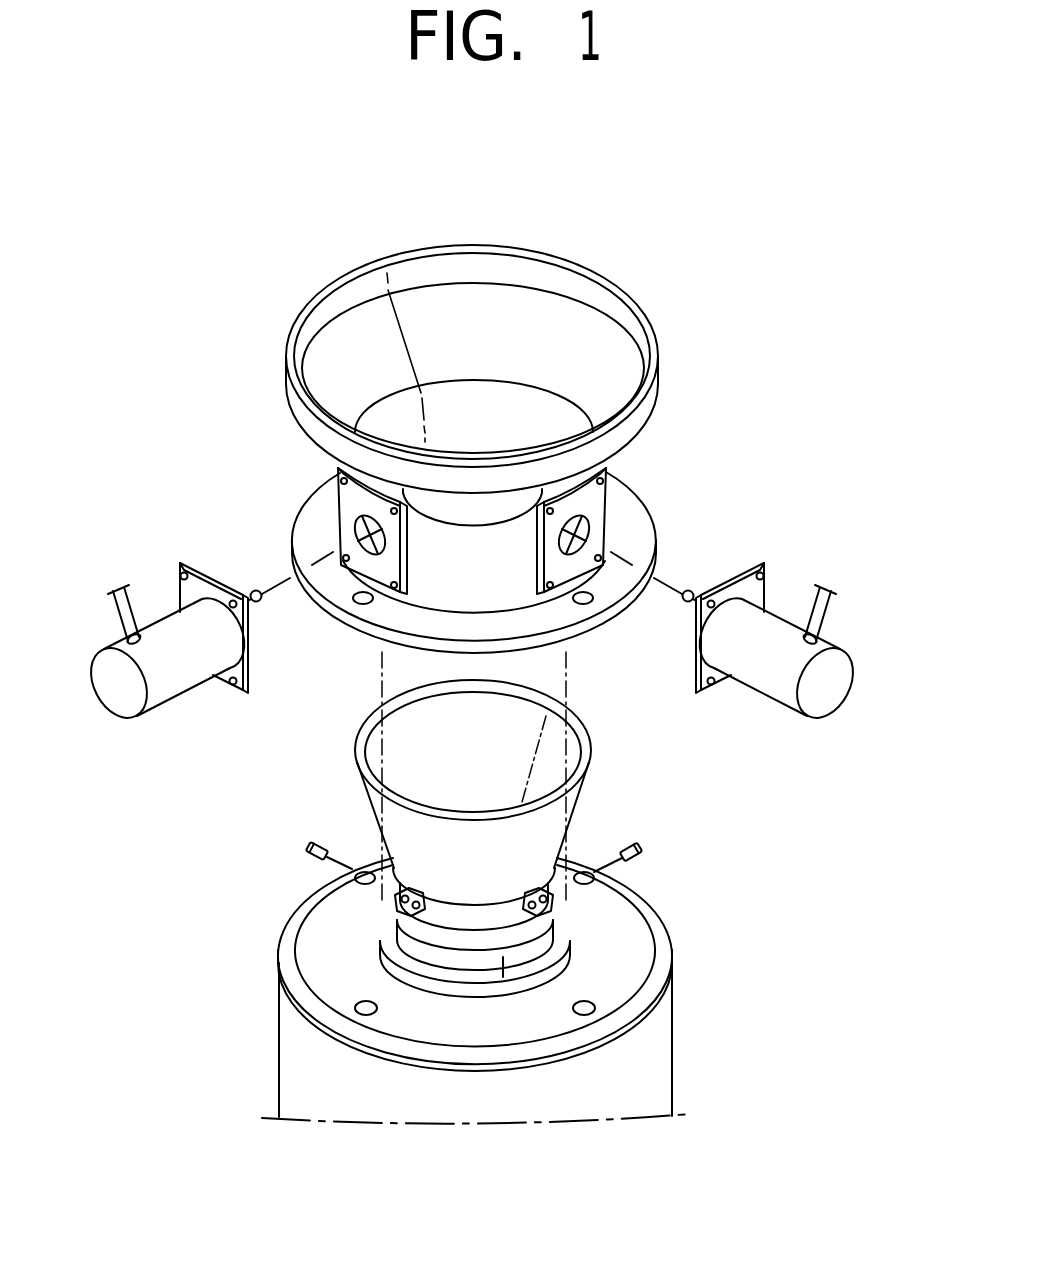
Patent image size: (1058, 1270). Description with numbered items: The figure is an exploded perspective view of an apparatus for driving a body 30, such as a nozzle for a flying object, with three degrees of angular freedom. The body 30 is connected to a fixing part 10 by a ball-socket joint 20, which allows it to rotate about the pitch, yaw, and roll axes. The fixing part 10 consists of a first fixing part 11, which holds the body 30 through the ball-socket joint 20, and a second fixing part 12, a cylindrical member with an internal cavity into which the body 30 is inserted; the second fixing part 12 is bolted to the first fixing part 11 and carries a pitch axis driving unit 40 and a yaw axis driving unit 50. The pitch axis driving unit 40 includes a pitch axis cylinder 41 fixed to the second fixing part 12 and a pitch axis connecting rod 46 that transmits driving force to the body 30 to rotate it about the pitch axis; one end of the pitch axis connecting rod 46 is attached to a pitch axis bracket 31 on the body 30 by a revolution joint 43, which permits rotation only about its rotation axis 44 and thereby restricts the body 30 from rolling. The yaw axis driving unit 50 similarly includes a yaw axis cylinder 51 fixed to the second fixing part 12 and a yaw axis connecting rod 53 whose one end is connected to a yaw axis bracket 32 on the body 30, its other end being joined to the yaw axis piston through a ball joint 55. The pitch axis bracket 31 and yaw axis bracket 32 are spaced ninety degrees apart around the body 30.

The fixing part 10 is at (532, 684).
The first fixing part 11 is at (600, 858).
The second fixing part 12 is at (603, 620).
The ball-socket joint 20 is at (522, 957).
The body 30 is at (474, 805).
The pitch axis bracket 31 is at (395, 902).
The yaw axis bracket 32 is at (553, 902).
The pitch axis driving unit 40 is at (795, 598).
The pitch axis cylinder 41 is at (806, 648).
The revolution joint 43 is at (690, 590).
The rotation axis 44 is at (643, 847).
The pitch axis connecting rod 46 is at (706, 597).
The yaw axis driving unit 50 is at (147, 598).
The yaw axis cylinder 51 is at (138, 648).
The yaw axis connecting rod 53 is at (238, 587).
The ball joint 55 is at (253, 590).